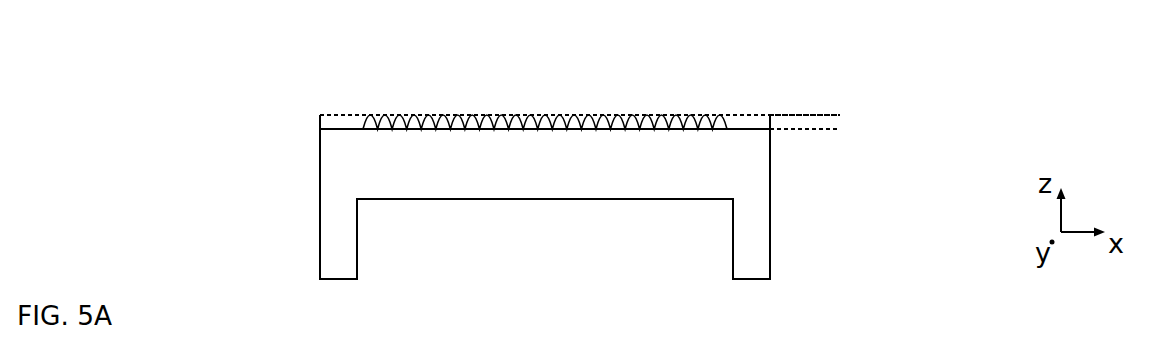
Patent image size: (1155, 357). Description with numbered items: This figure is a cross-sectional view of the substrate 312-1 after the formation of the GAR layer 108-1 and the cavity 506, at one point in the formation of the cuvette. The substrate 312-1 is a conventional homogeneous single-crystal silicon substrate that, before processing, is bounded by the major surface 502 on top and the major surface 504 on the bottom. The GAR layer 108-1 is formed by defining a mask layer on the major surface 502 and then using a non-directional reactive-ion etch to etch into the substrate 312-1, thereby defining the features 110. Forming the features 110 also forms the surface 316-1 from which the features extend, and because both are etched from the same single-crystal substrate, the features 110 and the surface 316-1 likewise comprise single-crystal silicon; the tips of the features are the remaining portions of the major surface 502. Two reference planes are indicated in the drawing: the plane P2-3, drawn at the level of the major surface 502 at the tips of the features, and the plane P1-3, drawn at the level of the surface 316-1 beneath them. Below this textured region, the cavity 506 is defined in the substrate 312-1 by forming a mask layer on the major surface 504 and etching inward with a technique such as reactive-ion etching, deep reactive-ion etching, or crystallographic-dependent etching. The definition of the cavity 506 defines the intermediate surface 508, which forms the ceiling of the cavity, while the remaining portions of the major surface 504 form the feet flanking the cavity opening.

The substrate 312-1 is at (256, 72).
The GAR layer 108-1 is at (340, 123).
The features 110 is at (583, 120).
The major surface 502 is at (749, 106).
The surface 316-1 is at (739, 135).
The plane P2-3 is at (812, 114).
The plane P1-3 is at (812, 130).
The cavity 506 is at (545, 239).
The intermediate surface 508 is at (657, 273).
The major surface 504 is at (757, 289).